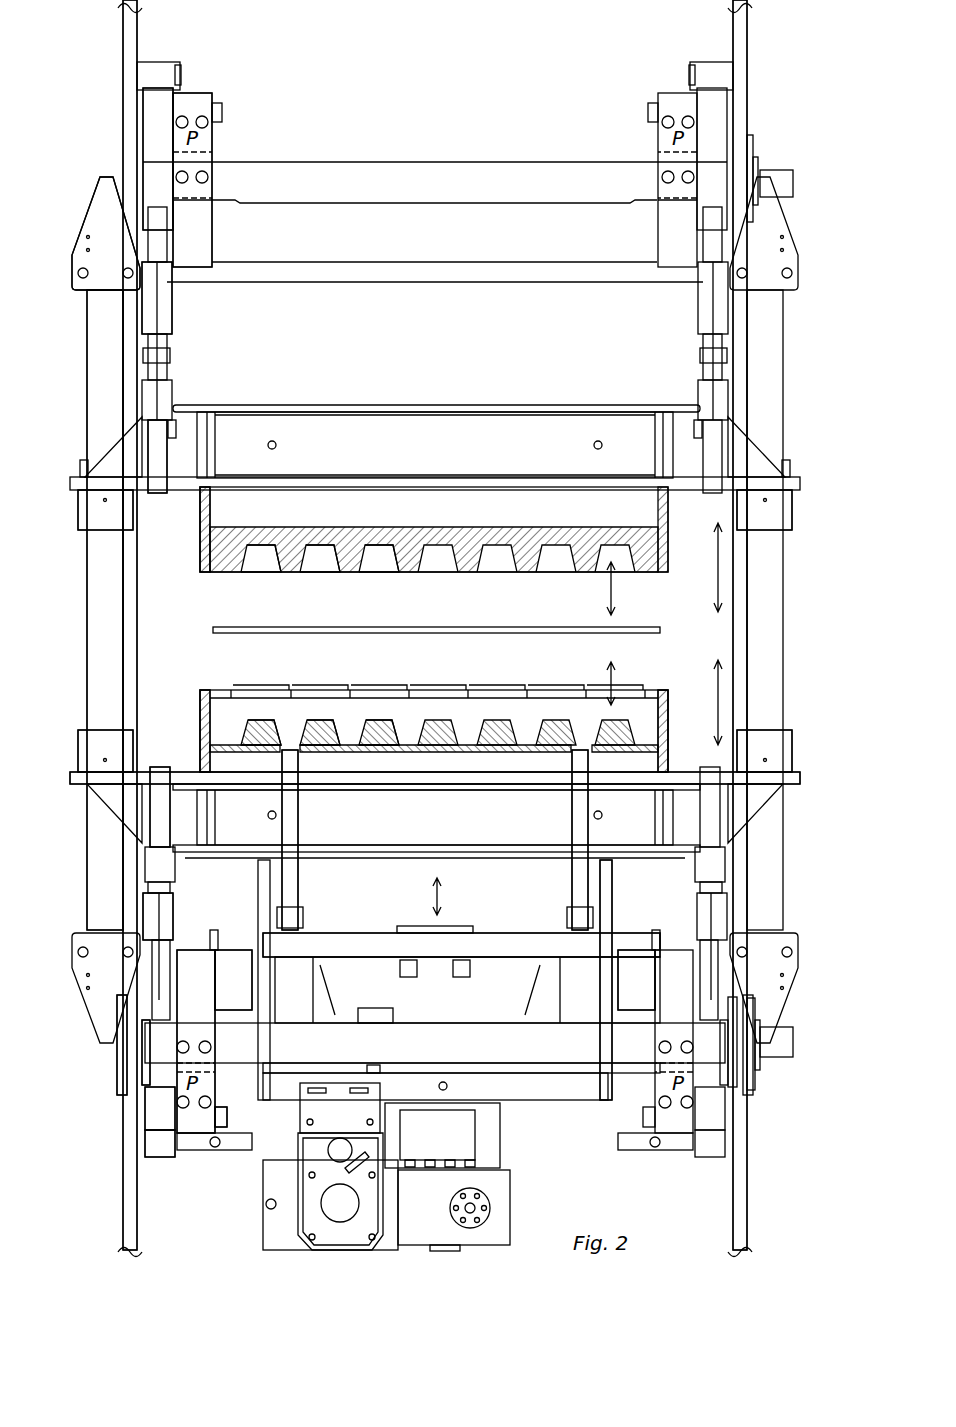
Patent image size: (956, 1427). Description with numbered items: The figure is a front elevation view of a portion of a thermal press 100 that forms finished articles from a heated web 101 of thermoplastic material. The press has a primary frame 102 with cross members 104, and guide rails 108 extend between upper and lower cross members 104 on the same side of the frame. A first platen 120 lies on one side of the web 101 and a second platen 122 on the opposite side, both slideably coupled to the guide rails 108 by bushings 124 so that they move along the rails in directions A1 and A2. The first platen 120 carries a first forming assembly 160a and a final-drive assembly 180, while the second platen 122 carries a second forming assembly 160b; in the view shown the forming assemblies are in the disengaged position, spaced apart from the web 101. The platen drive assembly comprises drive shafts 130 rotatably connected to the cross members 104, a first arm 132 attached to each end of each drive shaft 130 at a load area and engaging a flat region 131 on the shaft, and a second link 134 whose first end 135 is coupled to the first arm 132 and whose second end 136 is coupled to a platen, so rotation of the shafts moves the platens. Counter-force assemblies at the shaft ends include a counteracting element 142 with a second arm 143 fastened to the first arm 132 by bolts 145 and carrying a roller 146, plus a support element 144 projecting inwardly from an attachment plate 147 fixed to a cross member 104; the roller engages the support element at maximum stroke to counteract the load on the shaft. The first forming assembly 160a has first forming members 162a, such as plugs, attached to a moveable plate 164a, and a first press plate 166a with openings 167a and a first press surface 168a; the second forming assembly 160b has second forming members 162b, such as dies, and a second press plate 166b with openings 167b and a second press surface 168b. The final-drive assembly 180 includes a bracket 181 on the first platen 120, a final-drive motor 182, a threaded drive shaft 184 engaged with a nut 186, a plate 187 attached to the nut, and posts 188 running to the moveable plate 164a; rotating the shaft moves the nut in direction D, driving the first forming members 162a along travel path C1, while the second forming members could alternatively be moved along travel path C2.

The thermal press 100 is at (802, 95).
The web 101 is at (662, 631).
The primary frame 102 is at (763, 1226).
The cross members 104 is at (127, 34).
The guide rails 108 is at (105, 361).
The first platen 120 is at (140, 786).
The second platen 122 is at (345, 487).
The bushings 124 is at (90, 510).
The drive shafts 130 is at (240, 173).
The flat region 131 is at (215, 990).
The first arm 132 is at (188, 228).
The second link 134 is at (170, 358).
The first end 135 is at (140, 245).
The second end 136 is at (150, 455).
The counteracting element 142 is at (242, 1126).
The second arm 143 is at (220, 1085).
The support element 144 is at (160, 1155).
The bolts 145 is at (175, 1073).
The roller 146 is at (150, 1115).
The attachment plate 147 is at (140, 1150).
The first forming assembly 160a is at (192, 772).
The second forming assembly 160b is at (192, 490).
The first forming members 162a is at (322, 723).
The second forming members 162b is at (338, 560).
The moveable plate 164a is at (654, 692).
The first press plate 166a is at (220, 690).
The second press plate 166b is at (205, 574).
The openings 167a is at (260, 695).
The openings 167b is at (262, 555).
The first press surface 168a is at (425, 690).
The second press surface 168b is at (405, 562).
The final-drive assembly 180 is at (405, 900).
The bracket 181 is at (610, 898).
The final-drive motor 182 is at (310, 1212).
The threaded drive shaft 184 is at (448, 1062).
The nut 186 is at (455, 1002).
The plate 187 is at (514, 937).
The posts 188 is at (580, 823).
The platen movement direction A1 is at (728, 695).
The platen movement direction A2 is at (728, 565).
The travel path C1 is at (590, 674).
The travel path C2 is at (587, 591).
The nut movement direction D is at (446, 896).